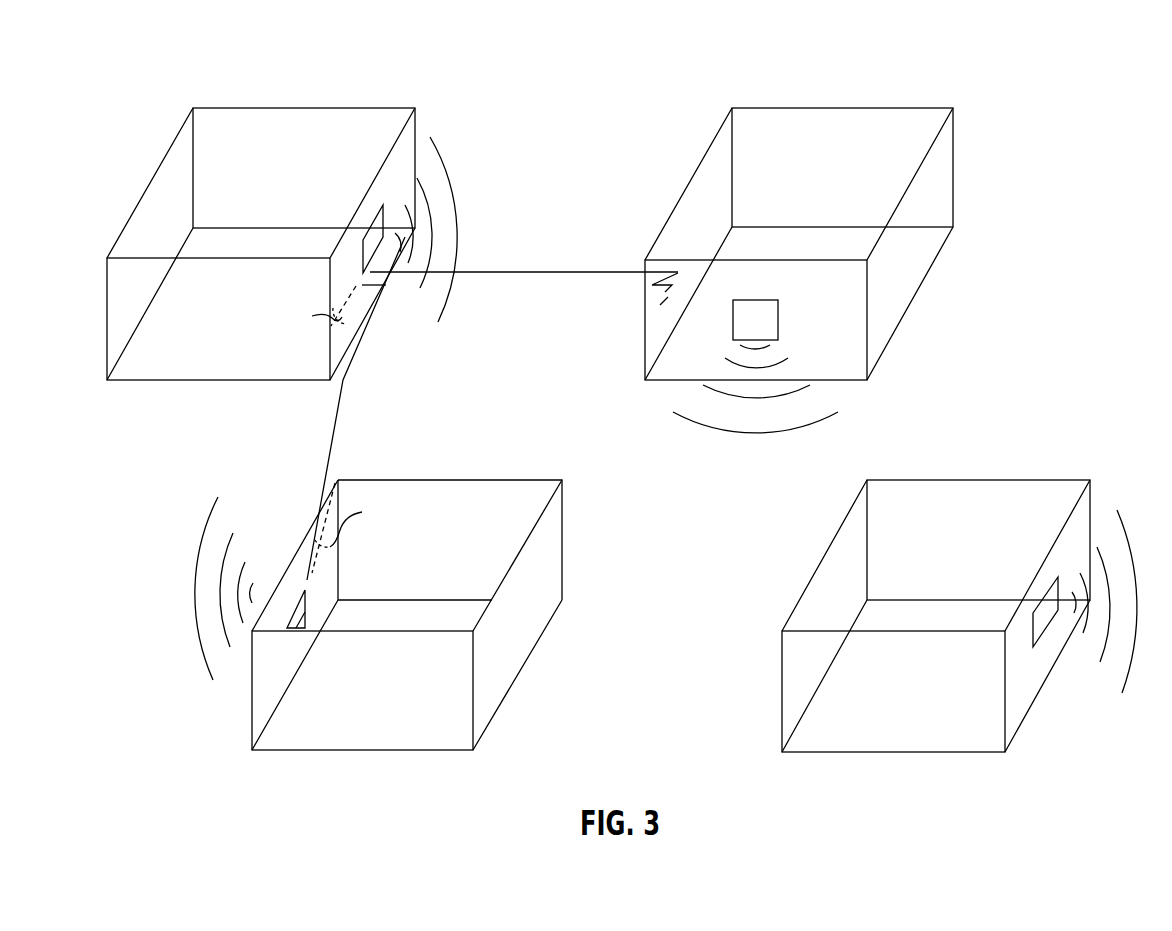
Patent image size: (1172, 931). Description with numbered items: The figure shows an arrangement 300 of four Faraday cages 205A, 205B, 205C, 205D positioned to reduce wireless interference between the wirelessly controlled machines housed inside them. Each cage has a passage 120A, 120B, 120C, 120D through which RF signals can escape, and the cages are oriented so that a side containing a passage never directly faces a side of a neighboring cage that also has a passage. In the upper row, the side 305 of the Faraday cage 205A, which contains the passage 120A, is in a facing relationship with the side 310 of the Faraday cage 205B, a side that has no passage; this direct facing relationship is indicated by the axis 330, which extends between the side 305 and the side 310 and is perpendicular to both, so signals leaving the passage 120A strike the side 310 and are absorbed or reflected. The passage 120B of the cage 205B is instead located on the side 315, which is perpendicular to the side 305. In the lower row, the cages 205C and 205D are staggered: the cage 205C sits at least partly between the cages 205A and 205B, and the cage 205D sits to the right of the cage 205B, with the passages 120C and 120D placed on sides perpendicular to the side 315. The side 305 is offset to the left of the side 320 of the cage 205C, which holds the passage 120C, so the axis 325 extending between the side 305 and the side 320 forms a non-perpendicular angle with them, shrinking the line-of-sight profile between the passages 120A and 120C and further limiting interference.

The arrangement 300 is at (1056, 60).
The Faraday cage 205A is at (305, 108).
The Faraday cage 205B is at (843, 107).
The Faraday cage 205C is at (450, 478).
The Faraday cage 205D is at (978, 478).
The passage 120A is at (366, 238).
The passage 120B is at (778, 318).
The passage 120C is at (307, 593).
The passage 120D is at (1040, 600).
The side 305 is at (388, 318).
The side 310 is at (662, 210).
The side 315 is at (856, 358).
The side 320 is at (265, 705).
The axis 325 is at (335, 435).
The axis 330 is at (523, 272).